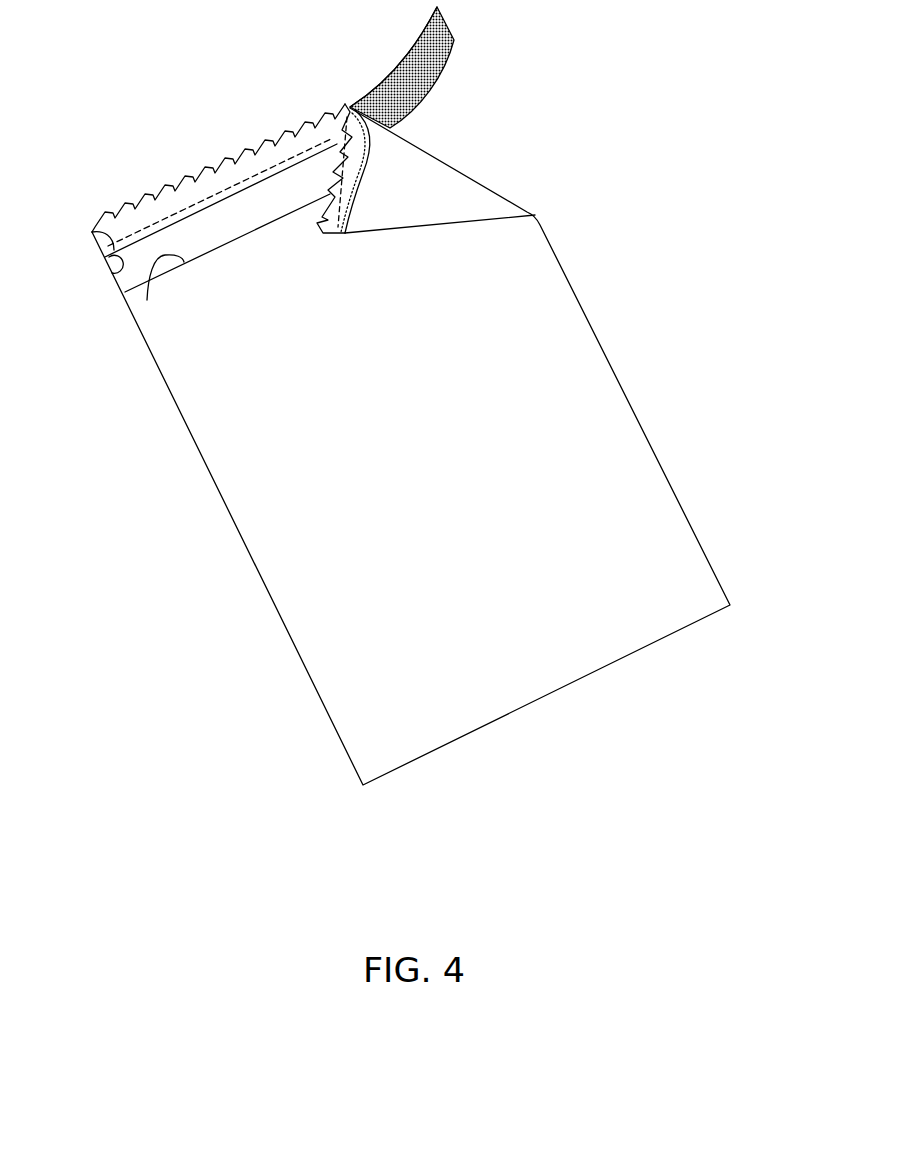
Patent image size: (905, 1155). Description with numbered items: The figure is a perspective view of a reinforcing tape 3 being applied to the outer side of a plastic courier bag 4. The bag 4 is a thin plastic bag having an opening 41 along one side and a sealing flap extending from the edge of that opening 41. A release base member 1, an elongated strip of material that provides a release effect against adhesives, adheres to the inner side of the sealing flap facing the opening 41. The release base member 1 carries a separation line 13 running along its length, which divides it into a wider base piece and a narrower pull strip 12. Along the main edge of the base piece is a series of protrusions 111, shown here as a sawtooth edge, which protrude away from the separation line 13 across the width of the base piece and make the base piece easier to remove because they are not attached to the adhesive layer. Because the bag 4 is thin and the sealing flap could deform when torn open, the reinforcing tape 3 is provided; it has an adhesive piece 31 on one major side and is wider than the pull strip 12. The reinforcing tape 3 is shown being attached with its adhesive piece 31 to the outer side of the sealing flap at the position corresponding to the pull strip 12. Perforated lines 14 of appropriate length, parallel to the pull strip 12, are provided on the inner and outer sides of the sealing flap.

The release base member 1 is at (220, 160).
The protrusions 111 is at (133, 201).
The pull strip 12 is at (290, 165).
The separation line 13 is at (197, 206).
The perforated lines 14 is at (96, 238).
The reinforcing tape 3 is at (445, 65).
The adhesive piece 31 is at (418, 67).
The plastic courier bag 4 is at (522, 268).
The opening 41 is at (147, 300).